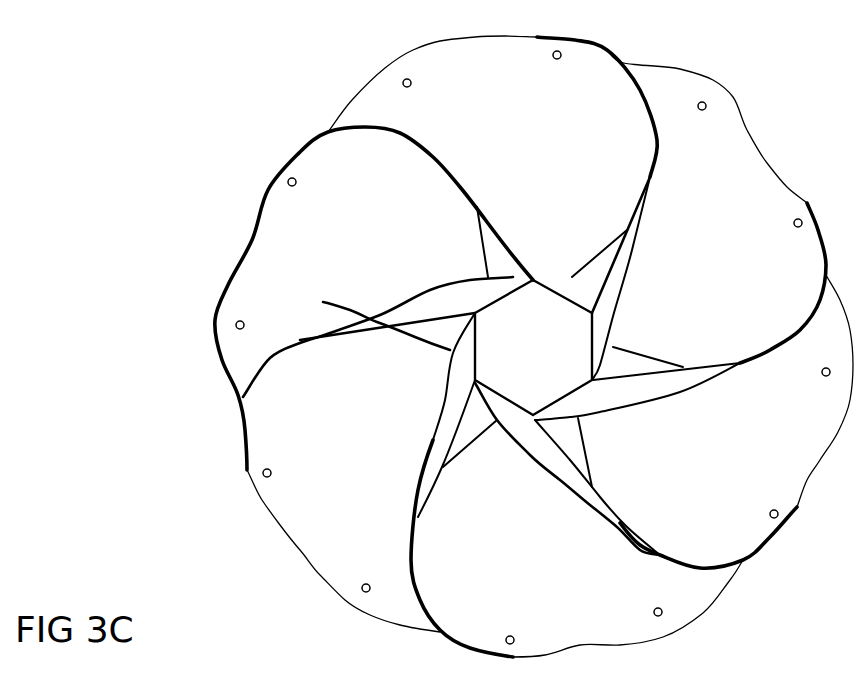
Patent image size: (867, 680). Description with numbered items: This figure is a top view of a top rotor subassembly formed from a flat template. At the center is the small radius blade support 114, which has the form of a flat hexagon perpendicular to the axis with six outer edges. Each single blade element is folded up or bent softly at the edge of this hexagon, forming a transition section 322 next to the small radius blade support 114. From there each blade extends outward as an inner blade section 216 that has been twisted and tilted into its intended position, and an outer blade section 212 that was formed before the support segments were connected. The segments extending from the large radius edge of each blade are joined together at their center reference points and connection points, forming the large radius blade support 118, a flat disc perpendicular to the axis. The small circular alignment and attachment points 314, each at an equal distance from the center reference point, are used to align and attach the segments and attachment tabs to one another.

The outer blade section 212 is at (243, 127).
The small radius blade support 114 is at (540, 357).
The large radius blade support 118 is at (323, 302).
The inner blade section 216 is at (497, 257).
The transition section 322 is at (540, 260).
The alignment and attachment point 314 is at (236, 323).